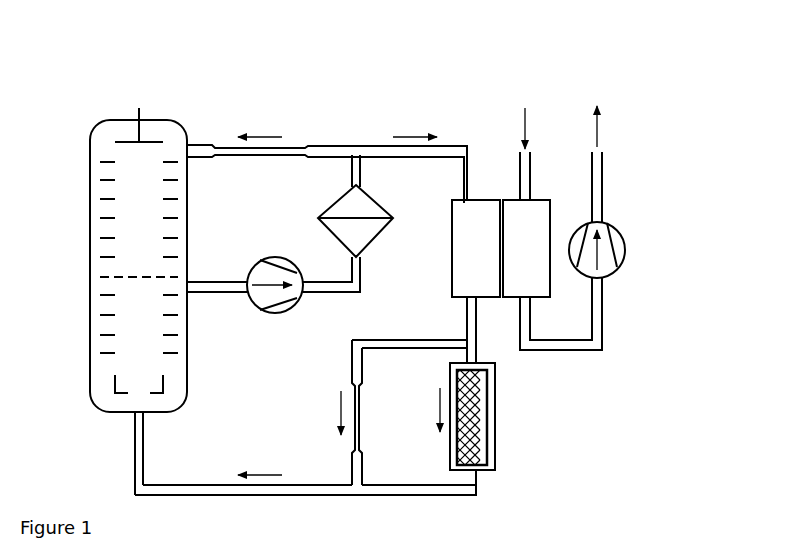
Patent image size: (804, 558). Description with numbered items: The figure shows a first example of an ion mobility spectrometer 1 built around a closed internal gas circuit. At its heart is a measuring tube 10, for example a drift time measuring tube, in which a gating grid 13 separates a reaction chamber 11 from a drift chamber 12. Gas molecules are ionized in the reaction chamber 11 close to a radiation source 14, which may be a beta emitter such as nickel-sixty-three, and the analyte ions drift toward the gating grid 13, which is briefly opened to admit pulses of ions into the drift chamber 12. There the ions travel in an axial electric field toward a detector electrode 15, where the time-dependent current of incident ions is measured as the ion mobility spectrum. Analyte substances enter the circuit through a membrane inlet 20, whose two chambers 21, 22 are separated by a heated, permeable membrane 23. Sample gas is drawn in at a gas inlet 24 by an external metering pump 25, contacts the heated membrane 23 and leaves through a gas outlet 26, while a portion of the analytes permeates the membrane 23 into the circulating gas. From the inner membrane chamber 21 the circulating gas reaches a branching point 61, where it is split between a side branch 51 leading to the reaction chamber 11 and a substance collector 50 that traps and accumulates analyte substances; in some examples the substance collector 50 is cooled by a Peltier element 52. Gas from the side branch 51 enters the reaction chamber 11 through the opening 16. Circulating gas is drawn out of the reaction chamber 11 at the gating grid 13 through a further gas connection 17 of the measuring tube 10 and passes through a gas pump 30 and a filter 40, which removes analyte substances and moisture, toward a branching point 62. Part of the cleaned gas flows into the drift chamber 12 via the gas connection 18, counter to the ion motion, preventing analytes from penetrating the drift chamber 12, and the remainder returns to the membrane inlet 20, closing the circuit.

The ion mobility spectrometer 1 is at (152, 55).
The measuring tube 10 is at (77, 262).
The reaction chamber 11 is at (139, 324).
The drift chamber 12 is at (139, 209).
The gating grid 13 is at (177, 268).
The radiation source 14 is at (168, 387).
The detector electrode 15 is at (148, 138).
The opening 16 is at (137, 413).
The tank side outlet 17 is at (190, 291).
The gas connection 18 is at (190, 153).
The membrane inlet 20 is at (561, 358).
The inner membrane chamber 21 is at (476, 281).
The membrane chamber 22 is at (526, 248).
The membrane 23 is at (493, 258).
The gas inlet 24 is at (538, 154).
The external metering pump 25 is at (627, 262).
The gas outlet 26 is at (610, 164).
The gas pump 30 is at (275, 313).
The filter 40 is at (372, 243).
The substance collector 50 is at (485, 420).
The side branch 51 is at (368, 345).
The Peltier element 52 is at (495, 393).
The branching point 61 is at (472, 343).
The branching point 62 is at (356, 152).